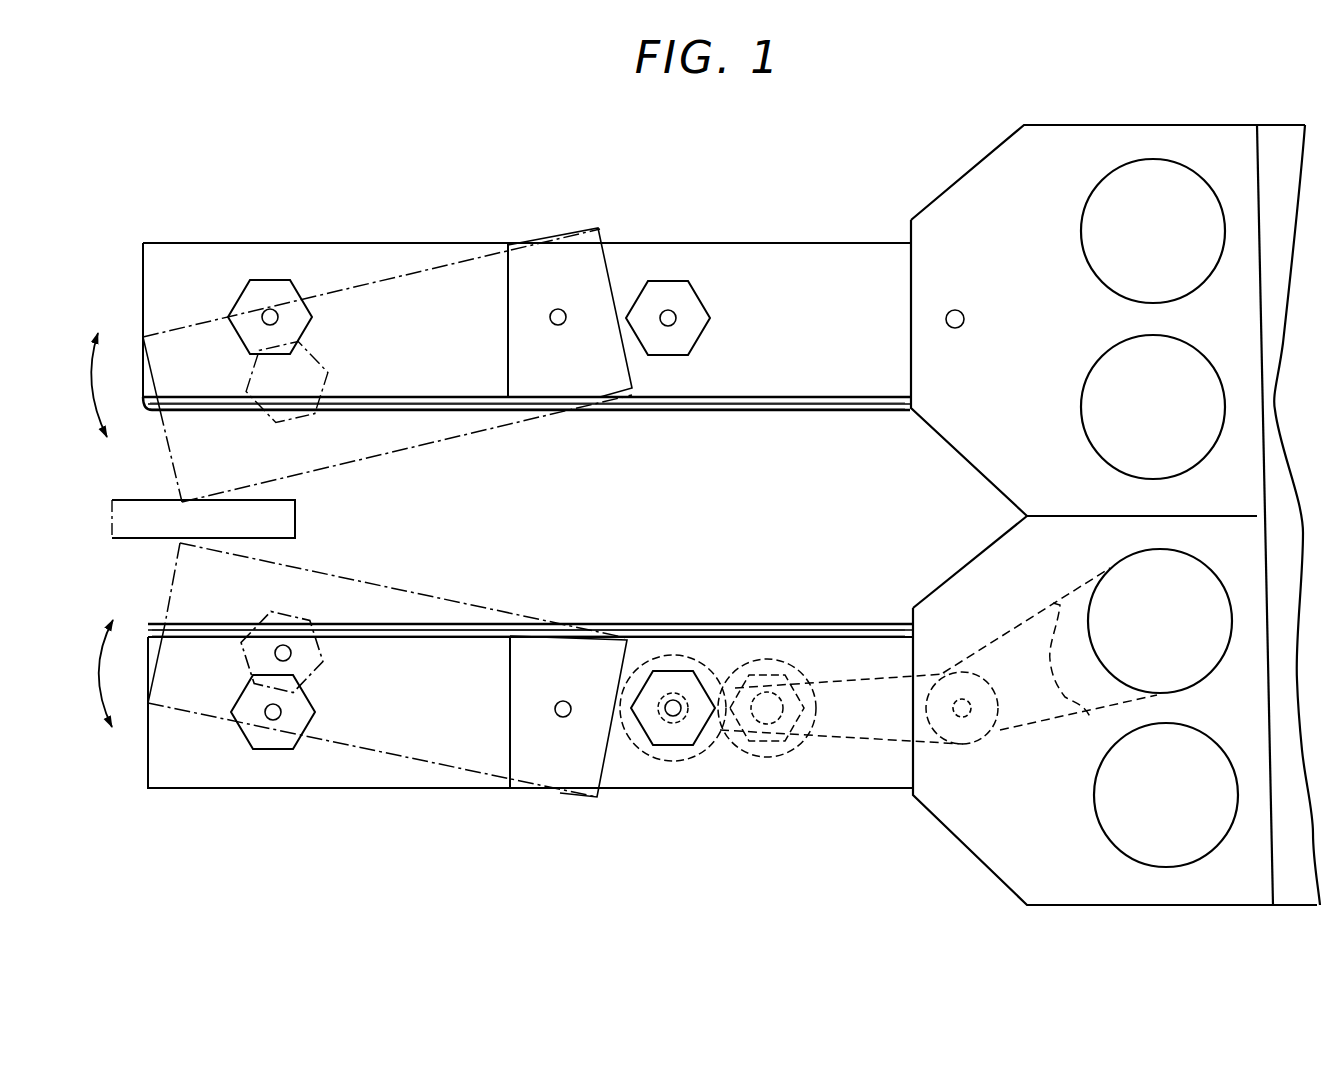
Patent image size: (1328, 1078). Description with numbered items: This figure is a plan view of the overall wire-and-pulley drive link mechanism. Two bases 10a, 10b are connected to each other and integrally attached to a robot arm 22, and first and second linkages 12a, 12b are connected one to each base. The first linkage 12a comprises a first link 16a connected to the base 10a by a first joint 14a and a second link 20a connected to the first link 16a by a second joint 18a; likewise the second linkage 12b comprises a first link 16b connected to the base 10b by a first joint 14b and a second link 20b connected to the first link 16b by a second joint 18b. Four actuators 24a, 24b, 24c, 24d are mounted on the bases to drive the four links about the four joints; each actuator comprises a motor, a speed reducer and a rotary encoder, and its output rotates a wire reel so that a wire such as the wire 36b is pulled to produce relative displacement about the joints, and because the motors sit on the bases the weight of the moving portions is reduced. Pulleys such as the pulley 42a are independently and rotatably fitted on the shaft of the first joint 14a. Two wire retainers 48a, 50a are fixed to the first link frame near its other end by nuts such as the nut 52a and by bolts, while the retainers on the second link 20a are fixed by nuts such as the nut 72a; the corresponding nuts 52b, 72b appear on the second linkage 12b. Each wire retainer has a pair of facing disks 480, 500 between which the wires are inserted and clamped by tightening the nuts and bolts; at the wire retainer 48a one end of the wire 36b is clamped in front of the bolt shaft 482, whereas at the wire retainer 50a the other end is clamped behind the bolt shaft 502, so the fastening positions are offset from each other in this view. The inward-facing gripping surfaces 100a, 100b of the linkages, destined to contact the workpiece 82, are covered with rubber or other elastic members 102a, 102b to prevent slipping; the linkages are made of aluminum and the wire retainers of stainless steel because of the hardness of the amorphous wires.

The base 10a is at (980, 556).
The base 10b is at (968, 168).
The first linkage 12a is at (458, 793).
The second linkage 12b is at (473, 233).
The first joint 14a is at (955, 697).
The first joint 14b is at (952, 330).
The first link 16a is at (680, 622).
The first link 16b is at (667, 408).
The second joint 18a is at (568, 697).
The second joint 18b is at (566, 336).
The second link 20a is at (463, 620).
The second link 20b is at (435, 410).
The robot arm 22 is at (1305, 569).
The actuator 24a is at (1192, 817).
The actuator 24b is at (1187, 642).
The actuator 24c is at (1178, 425).
The actuator 24d is at (1178, 250).
The wire 36b is at (830, 680).
The pulley 42a is at (1000, 707).
The wire retainer 48a is at (662, 762).
The wire retainer 50a is at (757, 766).
The nut 52a is at (670, 672).
The nut 52b is at (673, 282).
The nut 72a is at (313, 712).
The nut 72b is at (308, 320).
The workpiece 82 is at (297, 518).
The gripping surface 100a is at (362, 622).
The gripping surface 100b is at (353, 403).
The elastic member 102a is at (333, 622).
The elastic member 102b is at (375, 403).
The disks 480 is at (678, 760).
The bolt shaft 482 is at (650, 732).
The disks 500 is at (783, 757).
The bolt shaft 502 is at (790, 753).